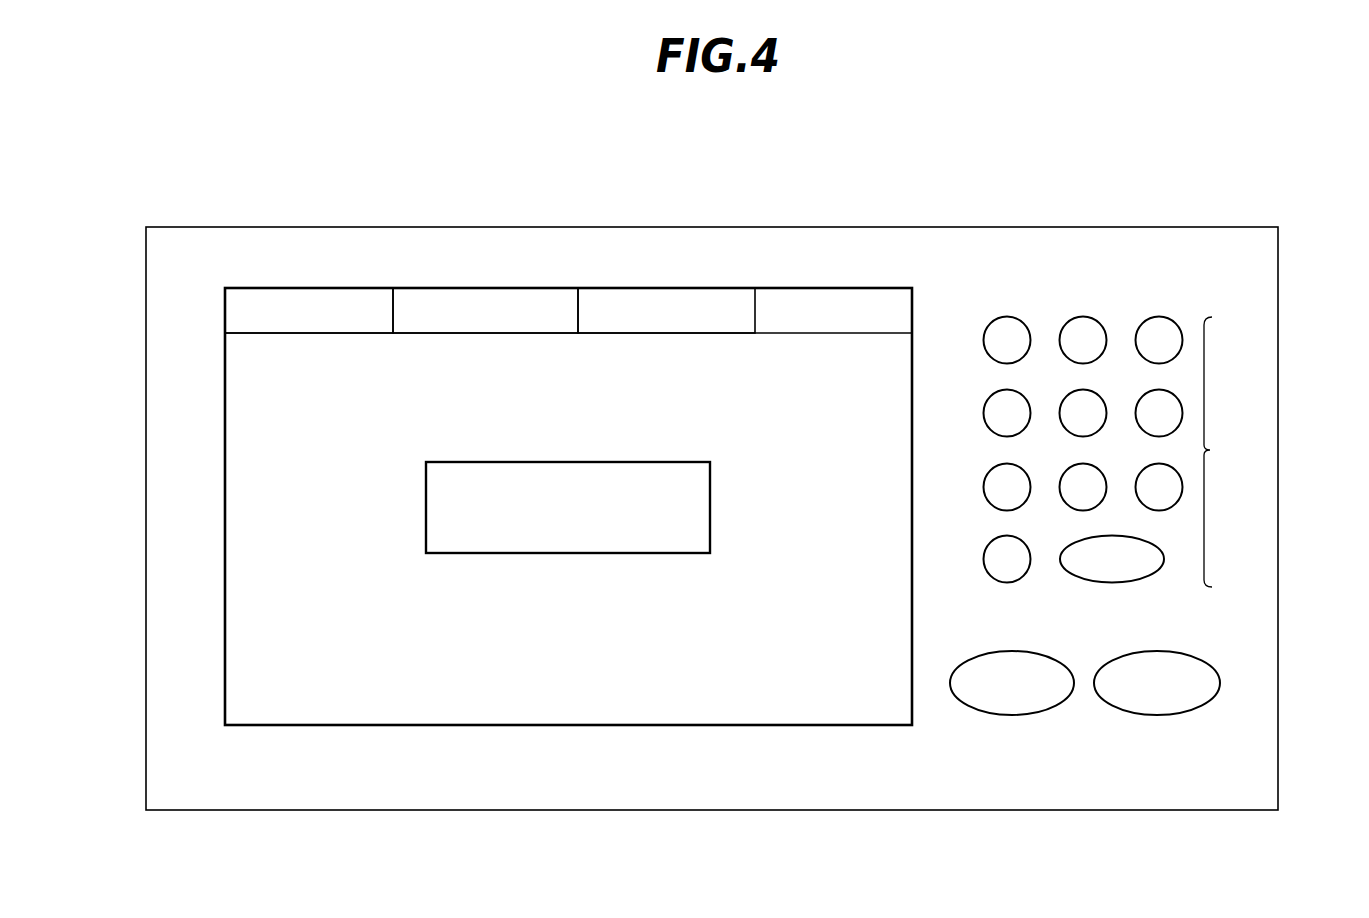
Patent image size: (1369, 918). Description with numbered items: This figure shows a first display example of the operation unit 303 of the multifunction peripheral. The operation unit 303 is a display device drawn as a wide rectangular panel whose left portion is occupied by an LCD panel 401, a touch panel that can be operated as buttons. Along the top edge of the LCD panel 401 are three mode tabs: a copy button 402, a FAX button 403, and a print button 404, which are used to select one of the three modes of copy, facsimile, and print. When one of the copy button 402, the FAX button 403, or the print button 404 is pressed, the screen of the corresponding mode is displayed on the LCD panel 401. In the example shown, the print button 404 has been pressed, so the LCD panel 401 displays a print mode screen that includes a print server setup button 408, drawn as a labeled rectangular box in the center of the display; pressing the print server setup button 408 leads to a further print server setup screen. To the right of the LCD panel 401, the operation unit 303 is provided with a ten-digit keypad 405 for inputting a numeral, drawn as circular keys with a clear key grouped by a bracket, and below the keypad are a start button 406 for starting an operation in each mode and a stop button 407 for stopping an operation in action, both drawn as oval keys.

The operation unit 303 is at (1163, 227).
The LCD panel 401 is at (225, 474).
The copy button 402 is at (330, 288).
The FAX button 403 is at (498, 288).
The print button 404 is at (670, 288).
The ten-digit keypad 405 is at (1210, 450).
The start button 406 is at (1010, 714).
The stop button 407 is at (1160, 714).
The print server setup button 408 is at (535, 553).